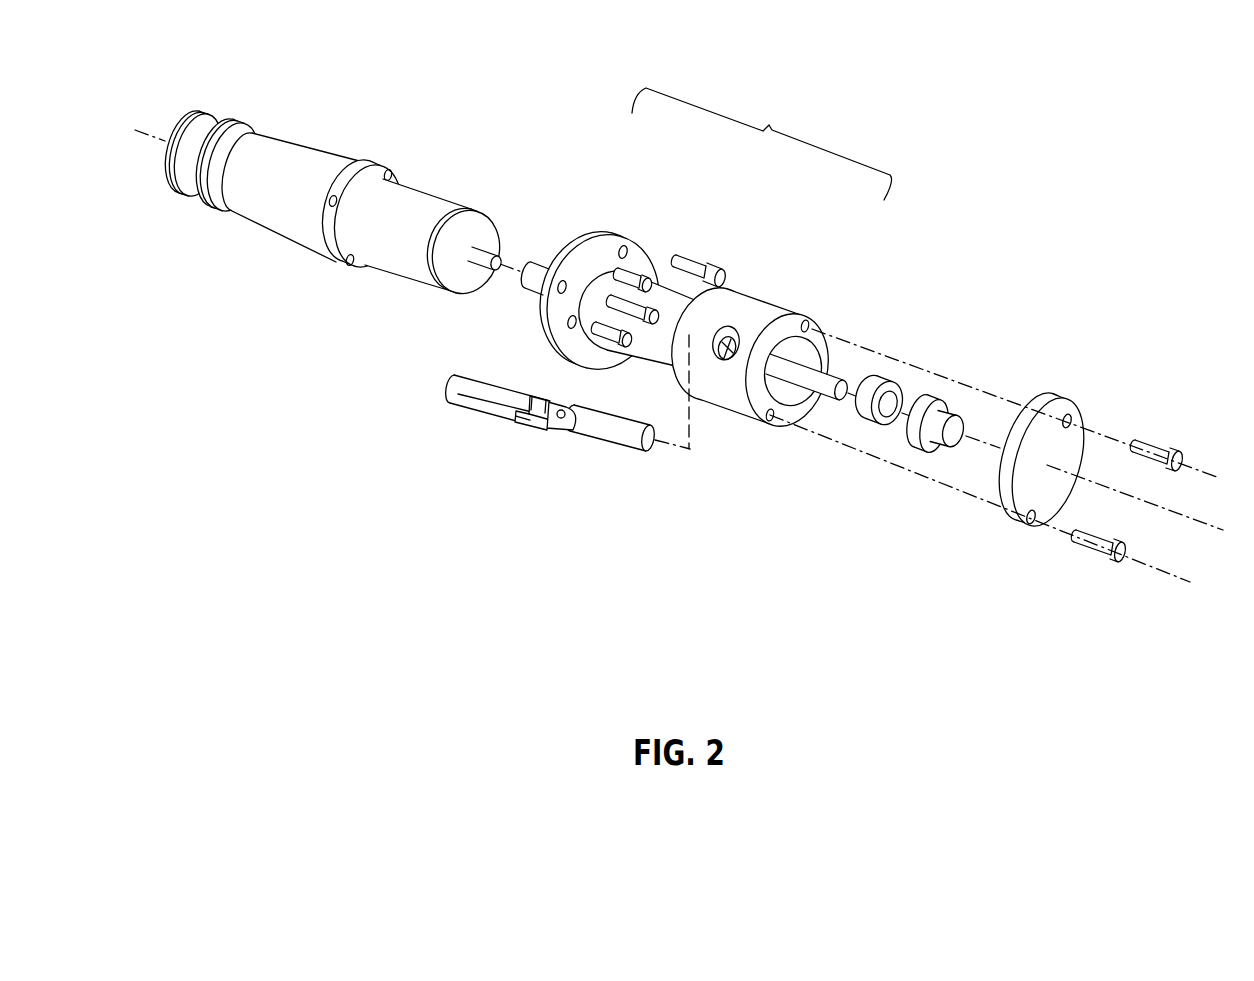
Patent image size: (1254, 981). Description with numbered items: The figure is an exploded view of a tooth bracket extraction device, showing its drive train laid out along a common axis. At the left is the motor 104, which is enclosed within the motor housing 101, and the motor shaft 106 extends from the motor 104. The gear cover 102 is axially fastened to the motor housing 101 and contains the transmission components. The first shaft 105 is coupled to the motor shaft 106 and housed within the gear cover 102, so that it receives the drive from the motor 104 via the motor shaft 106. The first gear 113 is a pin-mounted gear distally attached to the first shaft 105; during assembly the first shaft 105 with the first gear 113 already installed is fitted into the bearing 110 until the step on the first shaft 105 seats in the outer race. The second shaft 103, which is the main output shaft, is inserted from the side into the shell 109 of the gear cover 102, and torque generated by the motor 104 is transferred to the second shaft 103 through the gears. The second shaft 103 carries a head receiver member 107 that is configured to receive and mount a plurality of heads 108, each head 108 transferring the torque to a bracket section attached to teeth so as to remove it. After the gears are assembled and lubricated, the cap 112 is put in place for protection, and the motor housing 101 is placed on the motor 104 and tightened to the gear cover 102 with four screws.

The motor housing 101 is at (334, 152).
The gear cover 102 is at (770, 126).
The second shaft 103 is at (566, 434).
The motor 104 is at (445, 208).
The first shaft 105 is at (523, 290).
The motor shaft 106 is at (483, 253).
The head receiver member 107 is at (532, 433).
The head 108 is at (455, 401).
The shell 109 is at (763, 311).
The bearing 110 is at (872, 425).
The cap 112 is at (1058, 400).
The first gear 113 is at (940, 400).